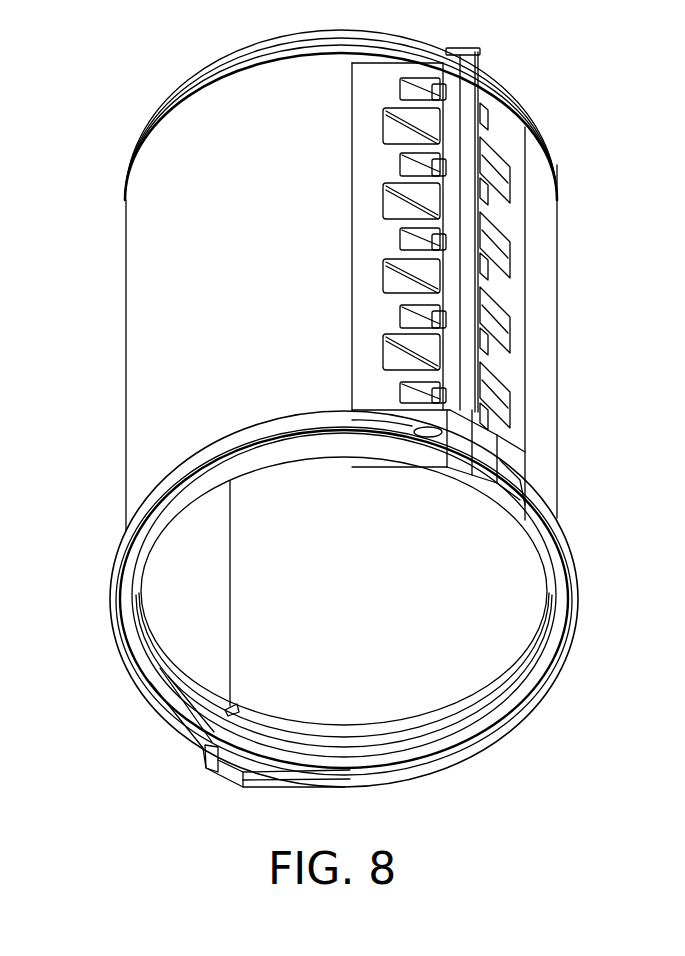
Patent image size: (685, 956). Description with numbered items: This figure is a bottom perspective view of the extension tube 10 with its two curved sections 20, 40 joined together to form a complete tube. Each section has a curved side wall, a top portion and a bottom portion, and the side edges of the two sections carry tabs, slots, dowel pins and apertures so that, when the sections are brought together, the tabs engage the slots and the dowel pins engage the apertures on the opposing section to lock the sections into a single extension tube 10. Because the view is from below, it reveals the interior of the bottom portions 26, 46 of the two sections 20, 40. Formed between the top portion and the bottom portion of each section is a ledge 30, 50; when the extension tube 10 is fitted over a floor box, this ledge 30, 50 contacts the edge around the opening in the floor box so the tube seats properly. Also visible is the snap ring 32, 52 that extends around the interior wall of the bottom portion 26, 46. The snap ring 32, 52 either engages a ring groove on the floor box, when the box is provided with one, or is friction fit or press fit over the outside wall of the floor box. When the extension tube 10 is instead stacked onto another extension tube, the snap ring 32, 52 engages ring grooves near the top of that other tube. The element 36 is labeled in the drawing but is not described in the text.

The extension tube 10 is at (150, 72).
The curved section 20 is at (155, 357).
The bottom portion 26 is at (165, 513).
The ledge 30 is at (216, 772).
The snap ring 32 is at (160, 685).
The seam 36 is at (119, 622).
The curved section 40 is at (541, 250).
The bottom portion 46 is at (557, 667).
The ledge 50 is at (448, 707).
The snap ring 52 is at (358, 752).